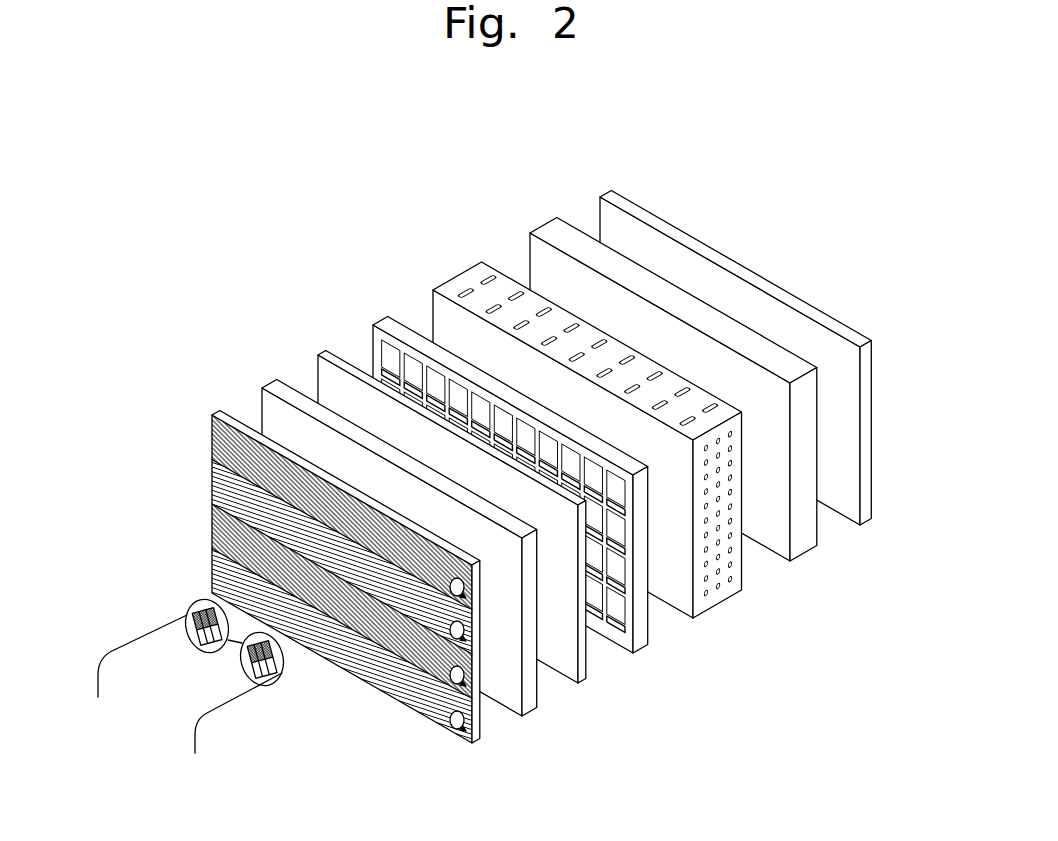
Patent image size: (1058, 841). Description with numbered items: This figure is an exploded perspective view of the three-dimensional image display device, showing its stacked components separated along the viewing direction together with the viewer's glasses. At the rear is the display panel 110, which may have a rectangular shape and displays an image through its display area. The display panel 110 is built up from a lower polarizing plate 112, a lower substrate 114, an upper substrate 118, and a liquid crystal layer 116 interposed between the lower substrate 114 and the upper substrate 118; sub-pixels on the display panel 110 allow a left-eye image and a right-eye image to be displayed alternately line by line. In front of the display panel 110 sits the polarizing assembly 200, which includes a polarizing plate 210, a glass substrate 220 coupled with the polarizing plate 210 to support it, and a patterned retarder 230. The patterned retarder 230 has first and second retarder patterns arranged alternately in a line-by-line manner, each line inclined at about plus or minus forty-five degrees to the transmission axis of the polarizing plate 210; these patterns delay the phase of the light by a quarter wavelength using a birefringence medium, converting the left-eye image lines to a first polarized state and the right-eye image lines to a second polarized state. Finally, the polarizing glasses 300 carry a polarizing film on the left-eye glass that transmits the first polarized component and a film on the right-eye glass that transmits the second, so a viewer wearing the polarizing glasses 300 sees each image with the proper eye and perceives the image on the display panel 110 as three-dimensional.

The display panel 110 is at (636, 457).
The lower polarizing plate 112 is at (863, 508).
The lower substrate 114 is at (805, 544).
The liquid crystal layer 116 is at (720, 597).
The upper substrate 118 is at (519, 513).
The polarizing assembly 200 is at (382, 516).
The polarizing plate 210 is at (323, 352).
The glass substrate 220 is at (273, 382).
The patterned retarder 230 is at (335, 556).
The polarizing glasses 300 is at (282, 675).